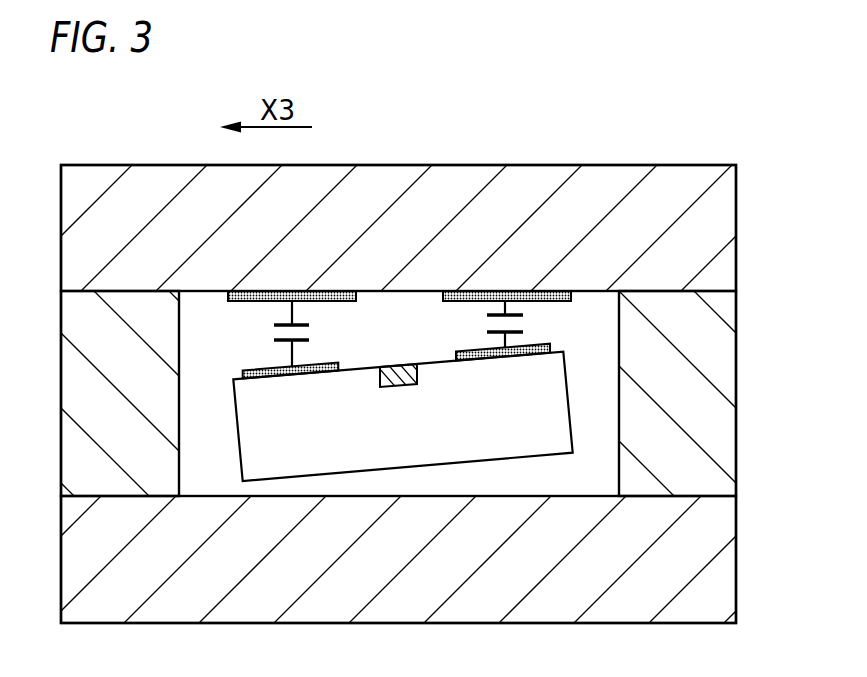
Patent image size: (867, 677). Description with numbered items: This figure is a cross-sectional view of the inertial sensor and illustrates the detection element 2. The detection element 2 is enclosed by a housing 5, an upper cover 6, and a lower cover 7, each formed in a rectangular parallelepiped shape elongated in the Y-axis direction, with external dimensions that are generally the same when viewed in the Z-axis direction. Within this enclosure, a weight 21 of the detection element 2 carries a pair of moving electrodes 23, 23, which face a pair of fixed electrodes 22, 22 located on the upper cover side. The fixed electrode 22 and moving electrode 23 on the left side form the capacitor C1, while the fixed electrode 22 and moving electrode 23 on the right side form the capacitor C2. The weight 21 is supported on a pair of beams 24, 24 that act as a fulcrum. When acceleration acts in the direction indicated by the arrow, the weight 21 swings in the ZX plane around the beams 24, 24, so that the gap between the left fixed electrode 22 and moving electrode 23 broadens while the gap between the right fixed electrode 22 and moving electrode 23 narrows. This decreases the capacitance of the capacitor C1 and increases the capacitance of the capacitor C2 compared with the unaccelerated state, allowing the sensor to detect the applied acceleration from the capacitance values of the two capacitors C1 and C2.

The detection element 2 is at (82, 149).
The housing 5 is at (723, 368).
The upper cover 6 is at (723, 221).
The lower cover 7 is at (722, 570).
The weight 21 is at (255, 445).
The fixed electrode 22 is at (246, 301).
The moving electrode 23 is at (242, 372).
The beam 24 is at (402, 387).
The capacitor C1 is at (306, 333).
The capacitor C2 is at (490, 324).